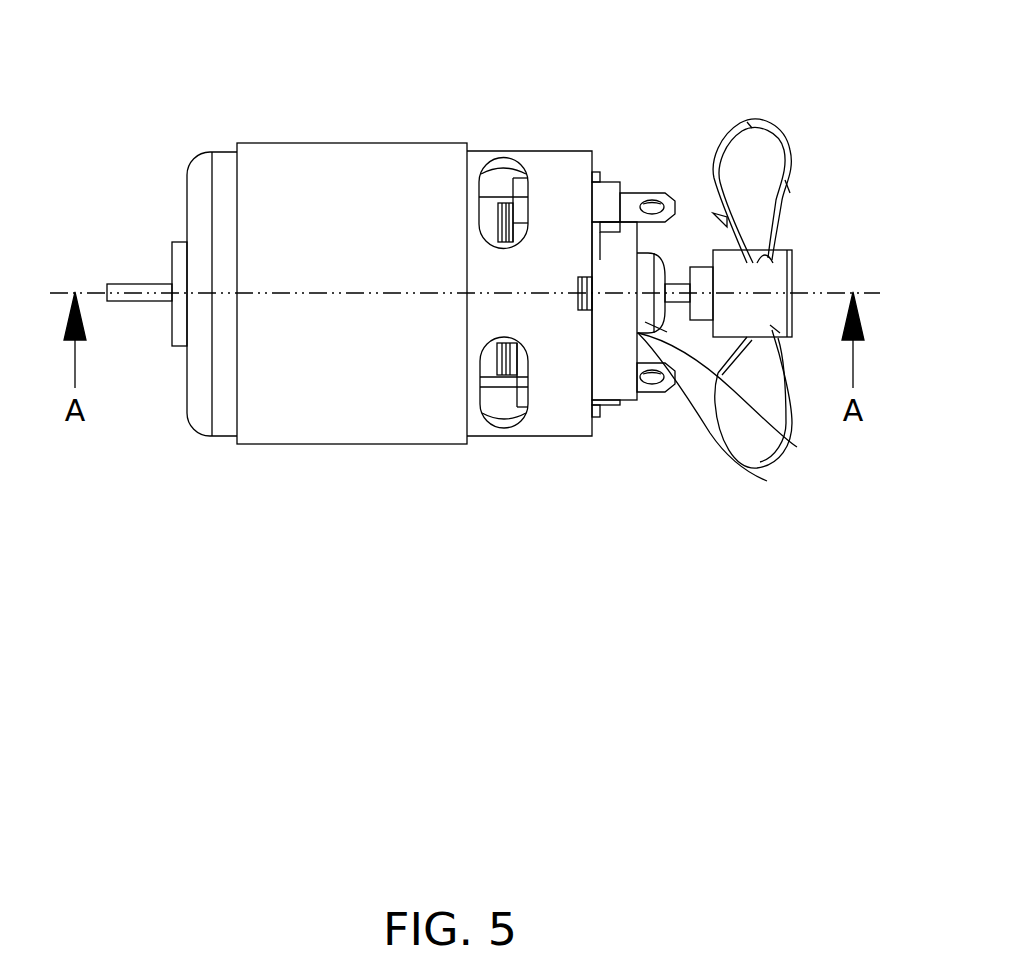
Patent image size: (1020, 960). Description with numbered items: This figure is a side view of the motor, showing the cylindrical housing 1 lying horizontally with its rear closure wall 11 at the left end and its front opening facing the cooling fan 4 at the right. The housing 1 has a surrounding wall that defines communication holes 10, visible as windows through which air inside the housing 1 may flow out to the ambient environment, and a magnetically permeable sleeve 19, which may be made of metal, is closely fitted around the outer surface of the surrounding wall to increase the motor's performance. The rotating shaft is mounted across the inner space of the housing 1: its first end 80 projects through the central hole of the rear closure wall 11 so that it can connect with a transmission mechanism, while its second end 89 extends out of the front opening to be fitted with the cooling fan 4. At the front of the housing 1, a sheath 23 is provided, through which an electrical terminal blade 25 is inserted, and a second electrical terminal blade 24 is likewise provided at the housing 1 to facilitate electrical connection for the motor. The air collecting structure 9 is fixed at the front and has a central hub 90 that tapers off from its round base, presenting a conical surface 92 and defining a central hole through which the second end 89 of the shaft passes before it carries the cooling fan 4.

The cylindrical housing 1 is at (390, 344).
The cooling fan 4 is at (775, 152).
The air collecting structure 9 is at (610, 388).
The communication holes 10 is at (510, 180).
The rear closure wall 11 is at (187, 192).
The magnetically permeable sleeve 19 is at (280, 438).
The sheath 23 is at (600, 200).
The electrical terminal blade 24 is at (653, 388).
The electrical terminal blade 25 is at (660, 198).
The first end 80 is at (137, 288).
The second end 89 is at (678, 288).
The central hub 90 is at (783, 443).
The conical surface 92 is at (760, 478).